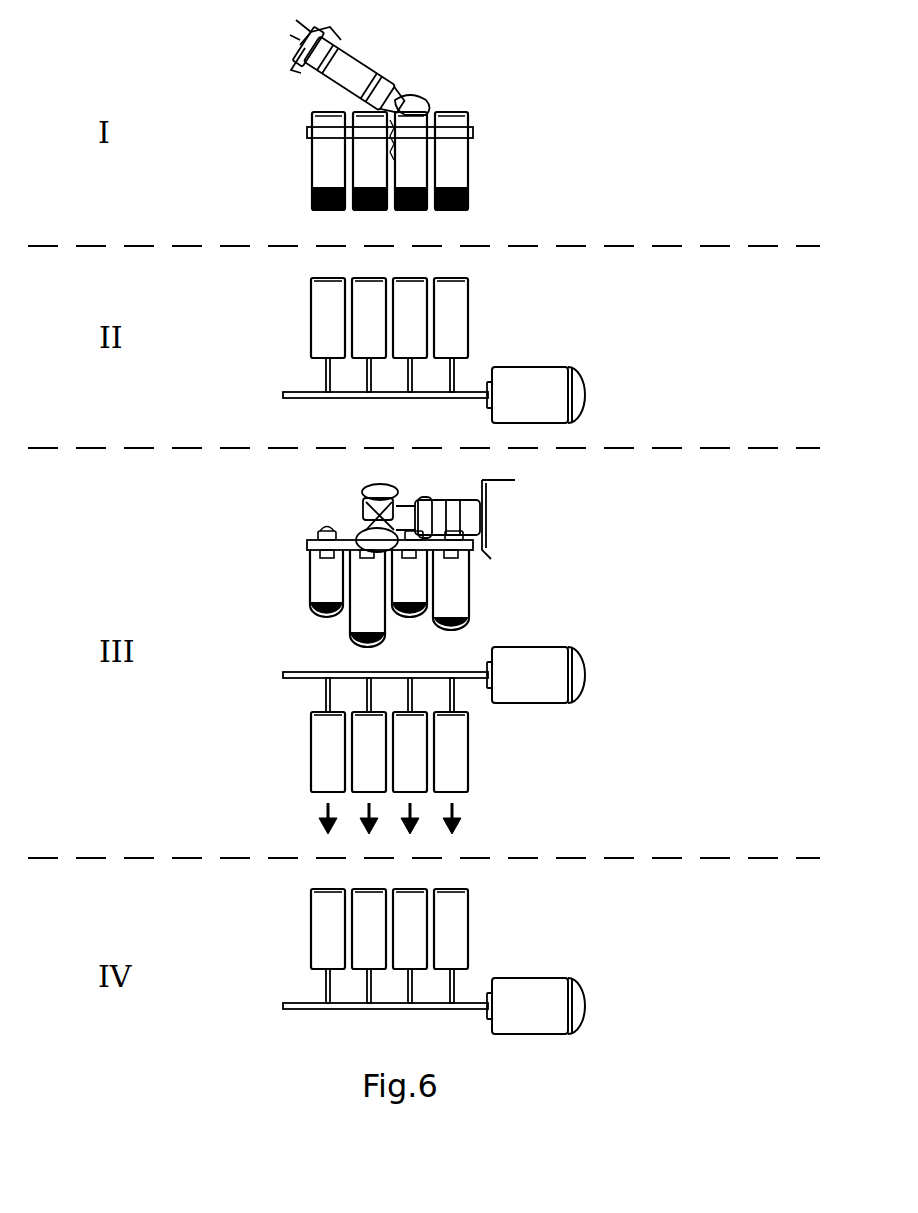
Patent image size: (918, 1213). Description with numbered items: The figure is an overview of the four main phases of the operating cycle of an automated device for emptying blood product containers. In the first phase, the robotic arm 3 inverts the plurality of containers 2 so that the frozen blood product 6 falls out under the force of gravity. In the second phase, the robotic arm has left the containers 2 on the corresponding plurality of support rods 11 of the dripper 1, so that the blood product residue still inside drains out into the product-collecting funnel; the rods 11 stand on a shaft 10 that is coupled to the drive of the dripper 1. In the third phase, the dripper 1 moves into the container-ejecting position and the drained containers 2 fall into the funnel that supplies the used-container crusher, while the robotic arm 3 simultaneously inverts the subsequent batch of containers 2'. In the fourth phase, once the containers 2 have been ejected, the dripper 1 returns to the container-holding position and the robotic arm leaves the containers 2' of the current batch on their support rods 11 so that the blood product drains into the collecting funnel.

The dripper 1 is at (535, 378).
The containers 2 is at (420, 467).
The containers of subsequent batch 2' is at (388, 748).
The robotic arm 3 is at (357, 78).
The frozen blood product 6 is at (323, 186).
The rotatable shaft 10 is at (462, 392).
The support rods 11 is at (328, 390).